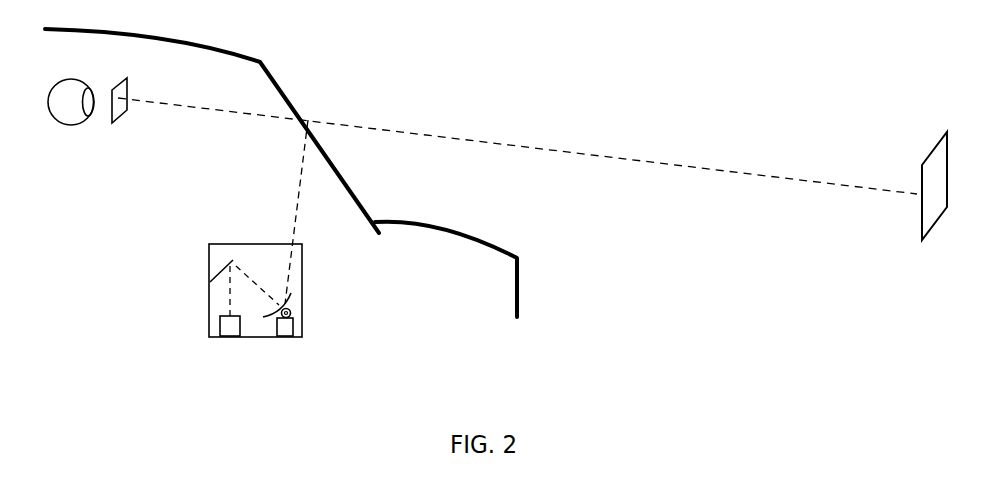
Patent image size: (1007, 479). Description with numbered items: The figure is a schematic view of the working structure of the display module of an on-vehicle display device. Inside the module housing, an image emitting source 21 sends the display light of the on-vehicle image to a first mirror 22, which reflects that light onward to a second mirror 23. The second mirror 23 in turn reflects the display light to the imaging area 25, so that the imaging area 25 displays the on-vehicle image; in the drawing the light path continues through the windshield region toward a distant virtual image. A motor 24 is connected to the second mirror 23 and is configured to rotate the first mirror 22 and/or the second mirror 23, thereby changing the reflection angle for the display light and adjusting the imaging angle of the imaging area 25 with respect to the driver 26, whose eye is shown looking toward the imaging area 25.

The image emitting source 21 is at (219, 327).
The first mirror 22 is at (209, 281).
The second mirror 23 is at (281, 308).
The motor 24 is at (294, 326).
The imaging area 25 is at (126, 76).
The driver 26 is at (65, 79).